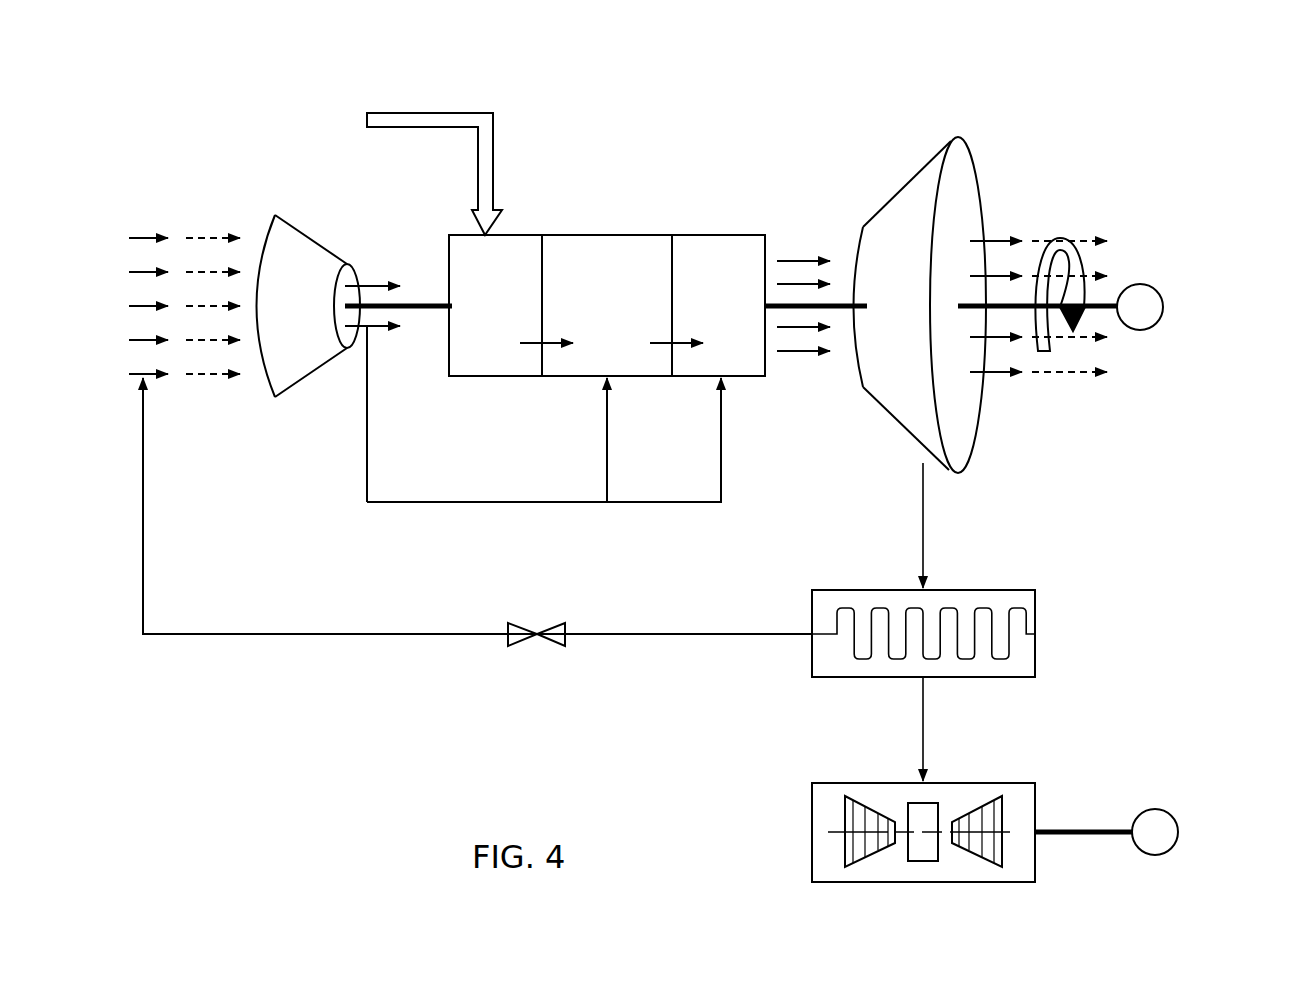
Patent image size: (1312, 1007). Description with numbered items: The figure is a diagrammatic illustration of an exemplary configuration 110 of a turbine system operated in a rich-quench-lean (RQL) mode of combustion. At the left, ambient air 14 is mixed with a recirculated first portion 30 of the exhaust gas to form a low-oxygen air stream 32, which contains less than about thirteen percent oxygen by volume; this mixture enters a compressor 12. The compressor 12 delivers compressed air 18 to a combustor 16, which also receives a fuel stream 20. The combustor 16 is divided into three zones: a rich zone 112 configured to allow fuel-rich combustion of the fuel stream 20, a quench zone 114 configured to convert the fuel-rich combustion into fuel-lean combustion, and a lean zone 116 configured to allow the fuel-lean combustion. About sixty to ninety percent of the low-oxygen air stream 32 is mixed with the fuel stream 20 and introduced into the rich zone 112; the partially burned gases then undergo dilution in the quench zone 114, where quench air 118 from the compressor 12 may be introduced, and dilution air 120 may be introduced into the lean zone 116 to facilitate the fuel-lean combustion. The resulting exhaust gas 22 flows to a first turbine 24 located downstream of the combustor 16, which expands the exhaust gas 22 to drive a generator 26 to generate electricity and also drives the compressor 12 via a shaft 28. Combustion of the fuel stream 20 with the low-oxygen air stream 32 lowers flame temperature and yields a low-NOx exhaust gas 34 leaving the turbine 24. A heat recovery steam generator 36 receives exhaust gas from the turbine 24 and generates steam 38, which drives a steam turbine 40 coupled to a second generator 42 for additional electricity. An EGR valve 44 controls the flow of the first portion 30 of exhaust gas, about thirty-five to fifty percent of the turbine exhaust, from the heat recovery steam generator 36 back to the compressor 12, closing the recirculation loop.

The configuration 110 is at (1181, 96).
The ambient air 14 is at (143, 237).
The low-oxygen air stream 32 is at (210, 237).
The compressor 12 is at (315, 242).
The compressed air 18 is at (370, 328).
The fuel stream 20 is at (428, 112).
The combustor 16 is at (619, 315).
The rich zone 112 is at (483, 379).
The quench zone 114 is at (548, 379).
The lean zone 116 is at (753, 379).
The quench air 118 is at (606, 483).
The dilution air 120 is at (722, 478).
The exhaust gas 22 is at (796, 354).
The shaft 28 is at (843, 302).
The first turbine 24 is at (977, 163).
The first portion of the exhaust gas 30 is at (990, 240).
The low-NOx exhaust gas 34 is at (1073, 238).
The generator 26 is at (1156, 285).
The heat recovery steam generator 36 is at (1012, 589).
The steam 38 is at (924, 737).
The steam turbine 40 is at (1027, 782).
The generator 42 is at (1158, 809).
The EGR valve 44 is at (512, 648).